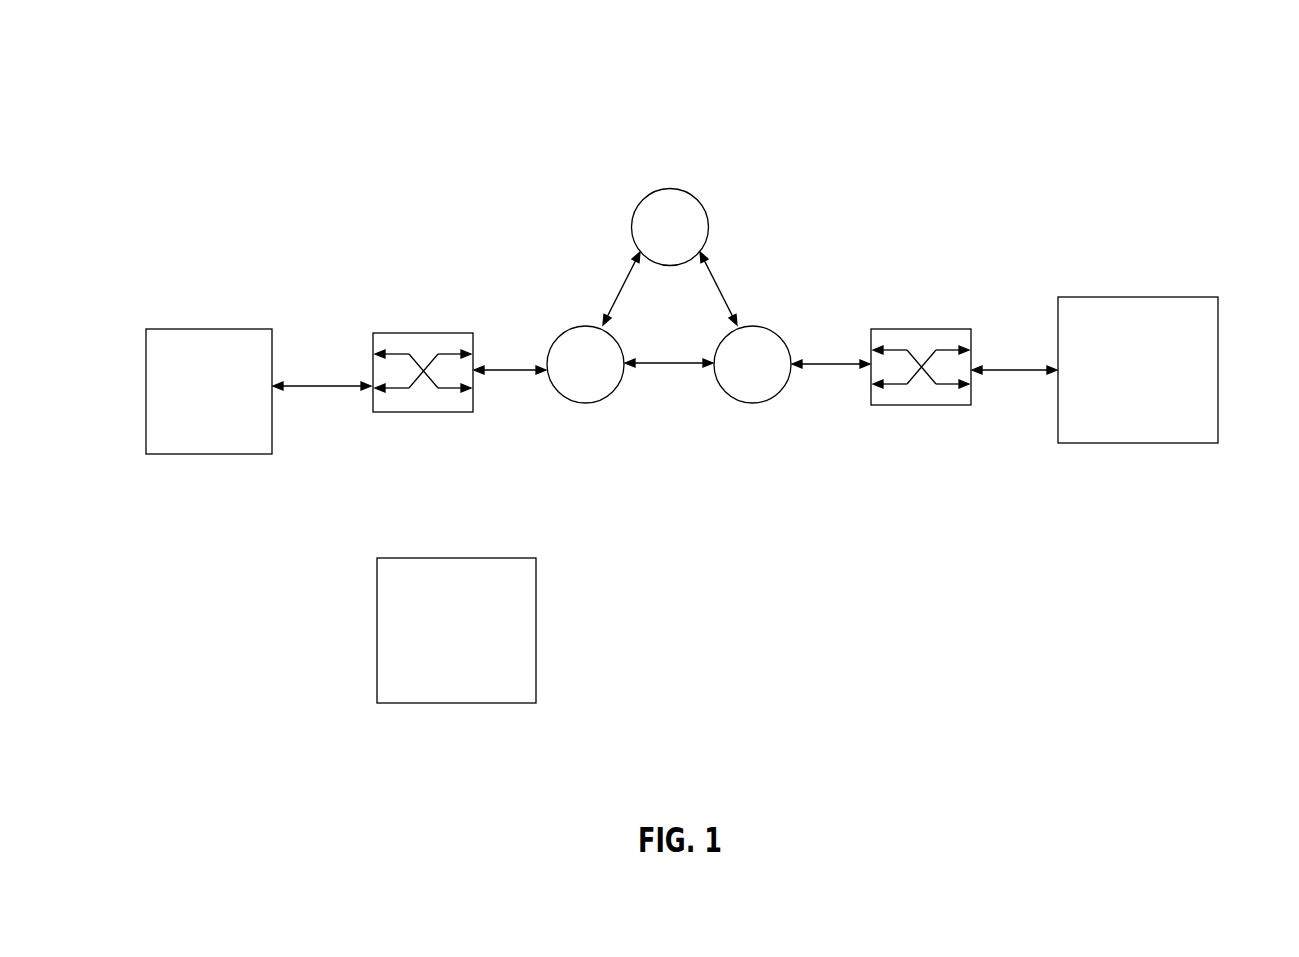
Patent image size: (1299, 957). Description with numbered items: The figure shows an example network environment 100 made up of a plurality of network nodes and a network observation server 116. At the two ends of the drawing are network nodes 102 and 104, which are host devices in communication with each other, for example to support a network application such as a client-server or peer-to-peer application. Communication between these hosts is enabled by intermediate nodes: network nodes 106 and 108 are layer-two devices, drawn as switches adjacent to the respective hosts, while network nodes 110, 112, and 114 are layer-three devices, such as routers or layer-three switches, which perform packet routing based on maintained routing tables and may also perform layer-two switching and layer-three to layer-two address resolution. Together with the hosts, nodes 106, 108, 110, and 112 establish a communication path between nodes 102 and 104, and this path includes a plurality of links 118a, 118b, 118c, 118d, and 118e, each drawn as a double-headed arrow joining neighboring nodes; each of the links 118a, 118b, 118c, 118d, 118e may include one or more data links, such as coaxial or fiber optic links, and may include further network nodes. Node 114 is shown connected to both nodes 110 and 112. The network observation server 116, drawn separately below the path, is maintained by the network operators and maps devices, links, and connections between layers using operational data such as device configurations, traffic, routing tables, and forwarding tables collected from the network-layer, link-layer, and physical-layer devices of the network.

The network environment 100 is at (1283, 87).
The network node 102 is at (209, 391).
The network node 104 is at (1138, 370).
The network node 106 is at (430, 333).
The network node 108 is at (927, 328).
The network node 110 is at (585, 364).
The network node 112 is at (752, 364).
The network node 114 is at (670, 227).
The network observation server 116 is at (456, 630).
The link 118a is at (327, 388).
The link 118b is at (513, 373).
The link 118c is at (670, 367).
The link 118d is at (823, 367).
The link 118e is at (1017, 373).